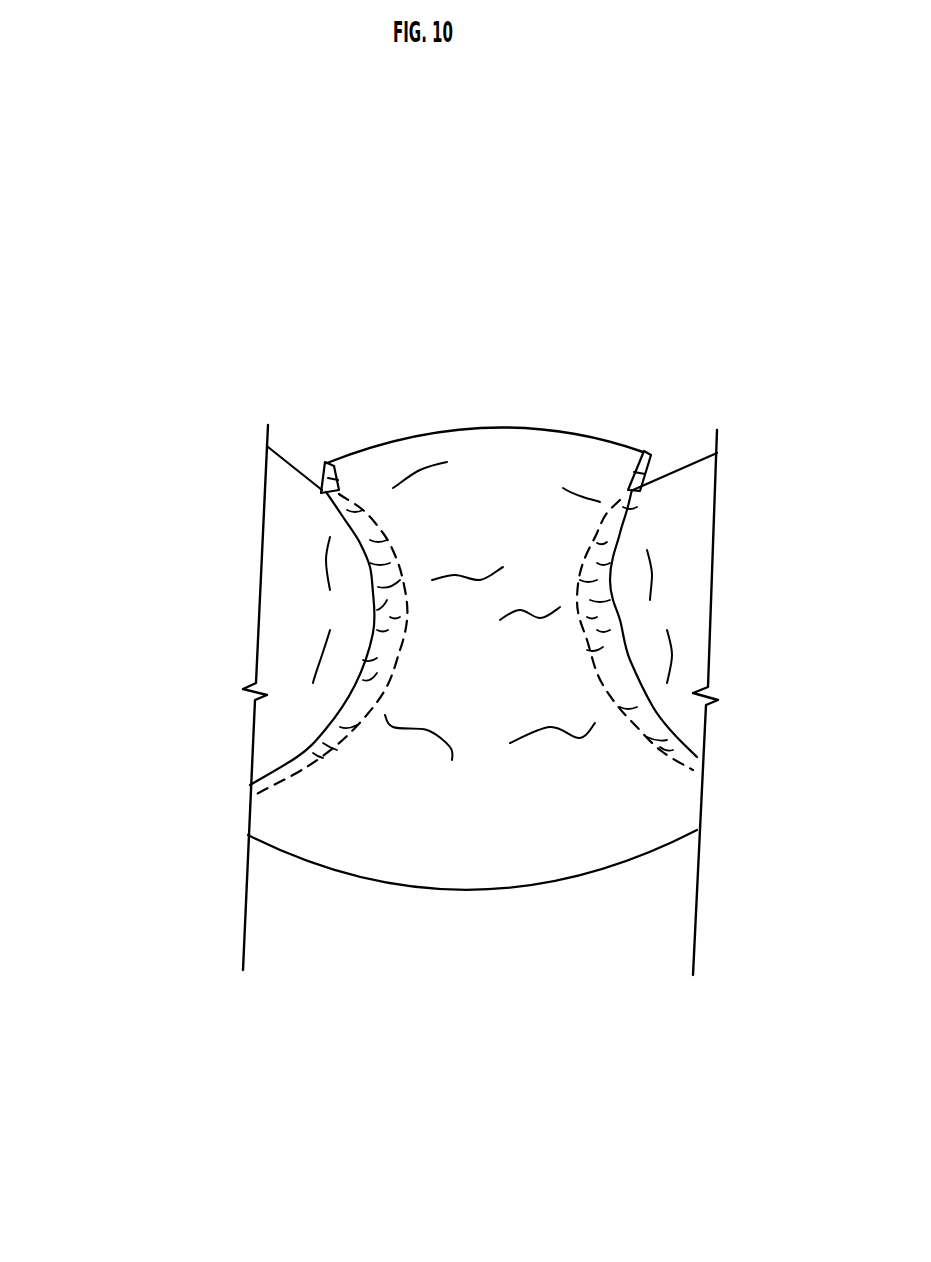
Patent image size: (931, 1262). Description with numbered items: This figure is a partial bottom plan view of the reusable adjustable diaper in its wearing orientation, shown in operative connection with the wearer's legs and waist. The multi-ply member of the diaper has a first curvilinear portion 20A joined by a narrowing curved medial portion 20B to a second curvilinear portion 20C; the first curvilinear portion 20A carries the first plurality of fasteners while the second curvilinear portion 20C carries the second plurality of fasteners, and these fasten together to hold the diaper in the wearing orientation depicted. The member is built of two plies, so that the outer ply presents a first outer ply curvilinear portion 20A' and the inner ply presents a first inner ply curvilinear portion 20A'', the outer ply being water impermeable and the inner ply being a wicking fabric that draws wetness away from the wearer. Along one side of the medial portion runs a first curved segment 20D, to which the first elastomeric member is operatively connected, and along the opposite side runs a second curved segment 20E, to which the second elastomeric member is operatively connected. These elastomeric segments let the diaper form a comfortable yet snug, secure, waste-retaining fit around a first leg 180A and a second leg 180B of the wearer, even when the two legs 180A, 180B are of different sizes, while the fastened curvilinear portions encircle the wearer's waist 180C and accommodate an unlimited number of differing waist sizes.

The first curvilinear portion 20A is at (472, 965).
The first outer ply curvilinear portion 20A' is at (445, 405).
The first inner ply curvilinear portion 20A'' is at (439, 695).
The narrowing curved medial portion 20B is at (445, 655).
The second curvilinear portion 20C is at (515, 427).
The first curved segment 20D is at (605, 652).
The second curved segment 20E is at (367, 603).
The first leg 180A is at (388, 626).
The second leg 180B is at (683, 613).
The waist 180C is at (322, 483).